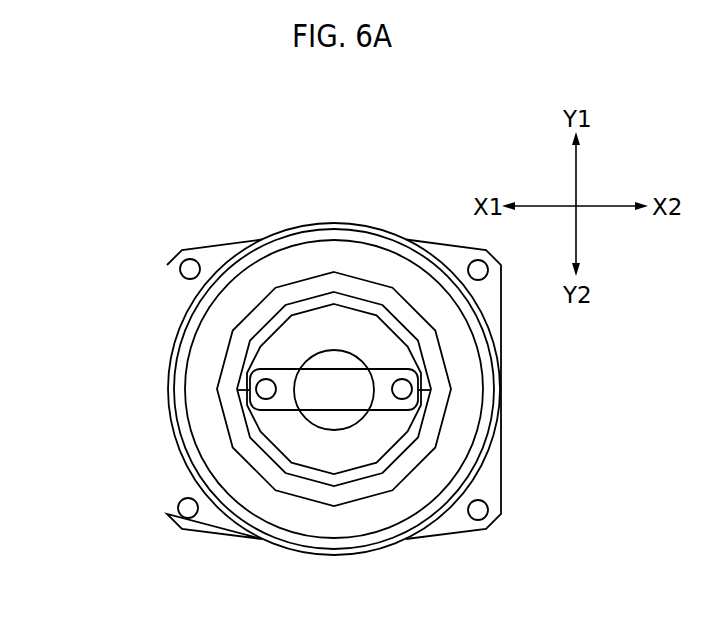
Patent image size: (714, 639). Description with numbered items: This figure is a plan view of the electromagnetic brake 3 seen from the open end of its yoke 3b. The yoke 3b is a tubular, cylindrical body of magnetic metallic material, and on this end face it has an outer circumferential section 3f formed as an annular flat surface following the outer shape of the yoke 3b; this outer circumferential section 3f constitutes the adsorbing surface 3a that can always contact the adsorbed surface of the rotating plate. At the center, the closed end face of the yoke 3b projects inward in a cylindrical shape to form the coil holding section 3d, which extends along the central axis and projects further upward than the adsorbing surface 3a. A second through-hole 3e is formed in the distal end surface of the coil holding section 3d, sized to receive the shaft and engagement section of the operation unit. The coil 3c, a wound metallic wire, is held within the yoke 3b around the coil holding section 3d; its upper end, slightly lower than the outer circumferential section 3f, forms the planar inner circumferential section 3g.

The electromagnetic brake 3 is at (470, 583).
The adsorbing surface 3a is at (180, 388).
The yoke 3b is at (480, 472).
The coil 3c is at (227, 307).
The coil holding section 3d is at (278, 440).
The second through-hole 3e is at (365, 416).
The outer circumferential section 3f is at (187, 327).
The inner circumferential section 3g is at (207, 433).